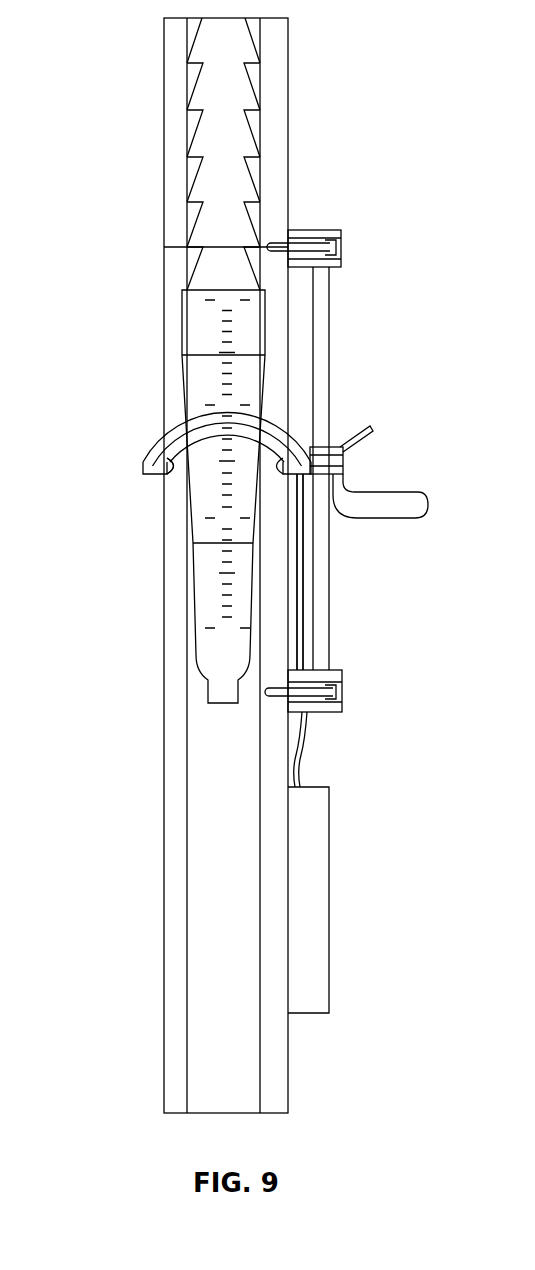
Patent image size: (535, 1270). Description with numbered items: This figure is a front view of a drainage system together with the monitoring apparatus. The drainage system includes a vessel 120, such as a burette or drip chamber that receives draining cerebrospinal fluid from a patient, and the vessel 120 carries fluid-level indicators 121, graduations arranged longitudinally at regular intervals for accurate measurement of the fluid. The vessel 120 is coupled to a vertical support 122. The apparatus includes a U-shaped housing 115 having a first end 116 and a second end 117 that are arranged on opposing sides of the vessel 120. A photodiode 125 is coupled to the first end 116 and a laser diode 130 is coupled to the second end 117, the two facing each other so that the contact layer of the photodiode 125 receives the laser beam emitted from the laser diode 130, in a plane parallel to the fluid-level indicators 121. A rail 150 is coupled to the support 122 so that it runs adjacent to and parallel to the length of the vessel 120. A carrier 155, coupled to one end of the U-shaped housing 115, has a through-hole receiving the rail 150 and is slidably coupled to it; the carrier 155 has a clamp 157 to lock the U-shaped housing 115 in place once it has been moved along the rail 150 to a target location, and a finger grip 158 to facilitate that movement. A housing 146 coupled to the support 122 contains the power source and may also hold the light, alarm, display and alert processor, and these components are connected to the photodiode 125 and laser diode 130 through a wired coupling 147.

The U-shaped housing 115 is at (355, 45).
The vertical support 122 is at (288, 137).
The vessel 120 is at (267, 330).
The fluid-level indicators 121 is at (206, 324).
The rail 150 is at (330, 345).
The carrier 155 is at (343, 458).
The clamp 157 is at (372, 428).
The finger grip 158 is at (405, 492).
The first end 116 is at (285, 472).
The photodiode 125 is at (300, 572).
The second end 117 is at (177, 470).
The laser diode 130 is at (225, 466).
The wired coupling 147 is at (308, 723).
The housing 146 is at (330, 803).